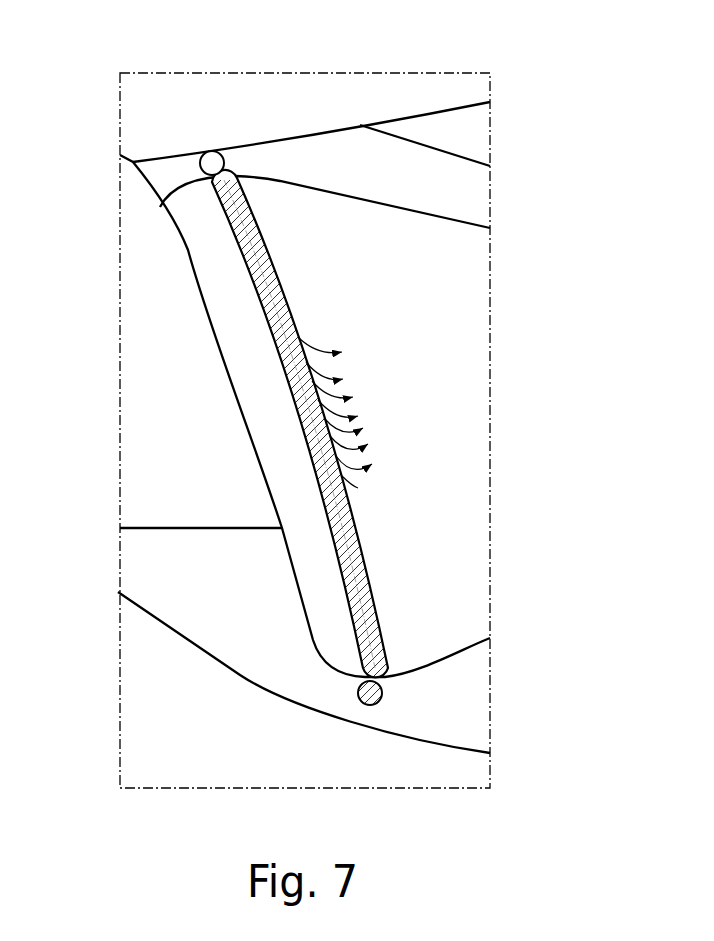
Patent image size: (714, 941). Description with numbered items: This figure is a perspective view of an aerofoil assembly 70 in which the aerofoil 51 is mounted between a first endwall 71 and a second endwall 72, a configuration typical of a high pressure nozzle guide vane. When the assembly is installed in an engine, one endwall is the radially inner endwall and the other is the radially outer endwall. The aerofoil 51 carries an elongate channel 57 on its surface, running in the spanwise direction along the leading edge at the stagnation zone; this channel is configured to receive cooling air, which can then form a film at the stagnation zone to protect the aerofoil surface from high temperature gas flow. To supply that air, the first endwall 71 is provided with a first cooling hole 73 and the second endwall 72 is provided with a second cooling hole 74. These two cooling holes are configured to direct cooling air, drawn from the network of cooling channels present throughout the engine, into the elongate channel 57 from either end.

The turbine stage 70 is at (510, 150).
The first endwall 71 is at (288, 150).
The first cooling hole 73 is at (187, 168).
The aerofoil 51 is at (427, 307).
The elongate channel 57 is at (305, 411).
The second endwall 72 is at (308, 671).
The second cooling hole 74 is at (355, 697).